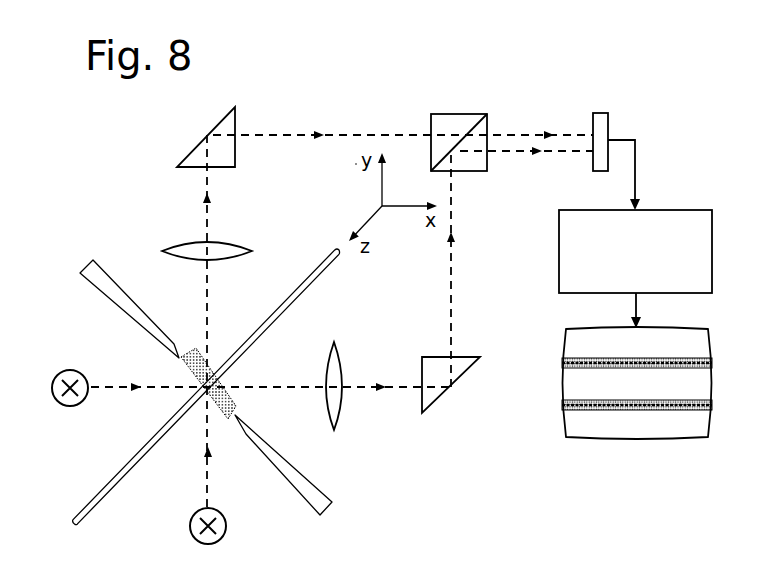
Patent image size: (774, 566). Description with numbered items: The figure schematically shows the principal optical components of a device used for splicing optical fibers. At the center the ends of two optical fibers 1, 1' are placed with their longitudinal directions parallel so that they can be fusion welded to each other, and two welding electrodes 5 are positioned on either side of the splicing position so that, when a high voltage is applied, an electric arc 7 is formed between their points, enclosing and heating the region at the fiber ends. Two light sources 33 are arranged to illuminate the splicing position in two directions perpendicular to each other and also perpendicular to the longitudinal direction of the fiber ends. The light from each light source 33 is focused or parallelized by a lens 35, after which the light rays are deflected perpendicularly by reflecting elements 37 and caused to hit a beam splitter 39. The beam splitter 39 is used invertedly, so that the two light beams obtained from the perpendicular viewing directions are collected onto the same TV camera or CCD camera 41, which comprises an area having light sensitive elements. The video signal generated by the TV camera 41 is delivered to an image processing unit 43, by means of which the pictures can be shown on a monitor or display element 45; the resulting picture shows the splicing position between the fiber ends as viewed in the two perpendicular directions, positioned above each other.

The optical fiber 1 is at (142, 453).
The optical fiber 1' is at (273, 317).
The welding electrode 5 is at (131, 301).
The electric arc 7 is at (192, 360).
The light source 33 is at (66, 368).
The lens 35 is at (186, 246).
The reflecting element 37 is at (231, 129).
The beam splitter 39 is at (470, 172).
The TV camera 41 is at (608, 120).
The image processing unit 43 is at (676, 210).
The display element 45 is at (567, 426).